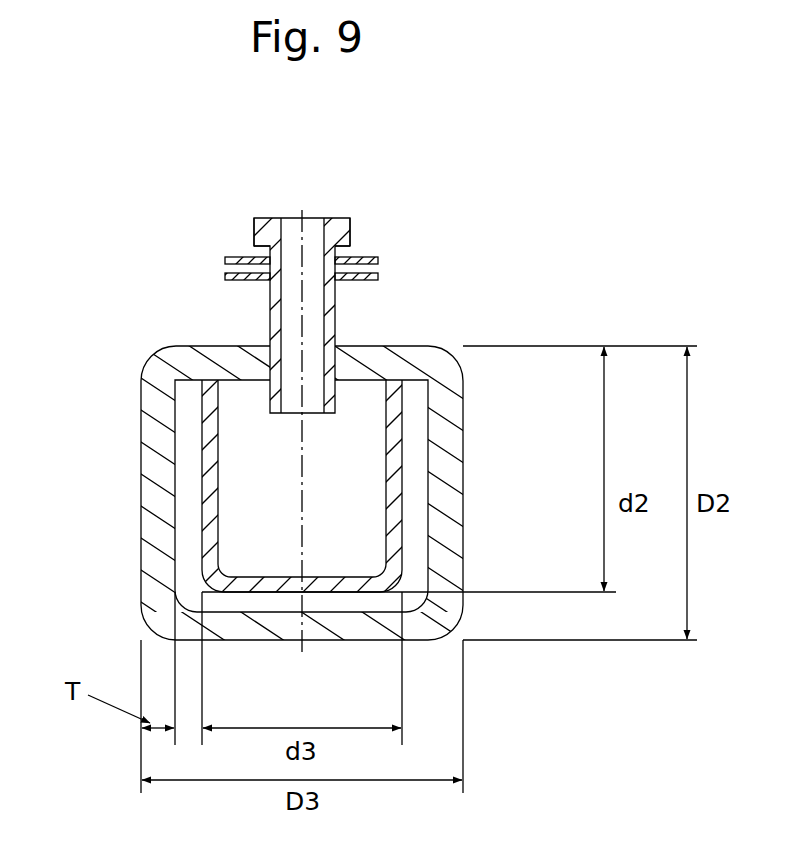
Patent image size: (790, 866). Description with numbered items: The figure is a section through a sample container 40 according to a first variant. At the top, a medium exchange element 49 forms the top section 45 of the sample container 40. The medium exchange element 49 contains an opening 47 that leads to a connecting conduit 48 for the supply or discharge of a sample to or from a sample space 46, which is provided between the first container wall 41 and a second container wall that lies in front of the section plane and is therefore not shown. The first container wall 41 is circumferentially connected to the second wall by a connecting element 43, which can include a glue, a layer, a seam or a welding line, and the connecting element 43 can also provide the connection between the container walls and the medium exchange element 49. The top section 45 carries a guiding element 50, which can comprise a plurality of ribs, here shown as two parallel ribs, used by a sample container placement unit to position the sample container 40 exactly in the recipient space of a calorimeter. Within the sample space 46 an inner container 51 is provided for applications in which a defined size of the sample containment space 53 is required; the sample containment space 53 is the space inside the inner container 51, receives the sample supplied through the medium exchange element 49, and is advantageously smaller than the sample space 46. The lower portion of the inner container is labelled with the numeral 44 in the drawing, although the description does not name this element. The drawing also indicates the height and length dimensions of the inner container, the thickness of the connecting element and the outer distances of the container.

The sample container 40 is at (200, 187).
The first container wall 41 is at (445, 453).
The connecting element 43 is at (445, 520).
The bottom wall of insert cup 44 is at (268, 644).
The top section 45 is at (262, 215).
The sample space 46 is at (190, 572).
The opening 47 is at (317, 216).
The connecting conduit 48 is at (326, 318).
The medium exchange element 49 is at (356, 212).
The guiding element 50 is at (223, 258).
The inner container 51 is at (210, 490).
The sample containment space 53 is at (278, 515).